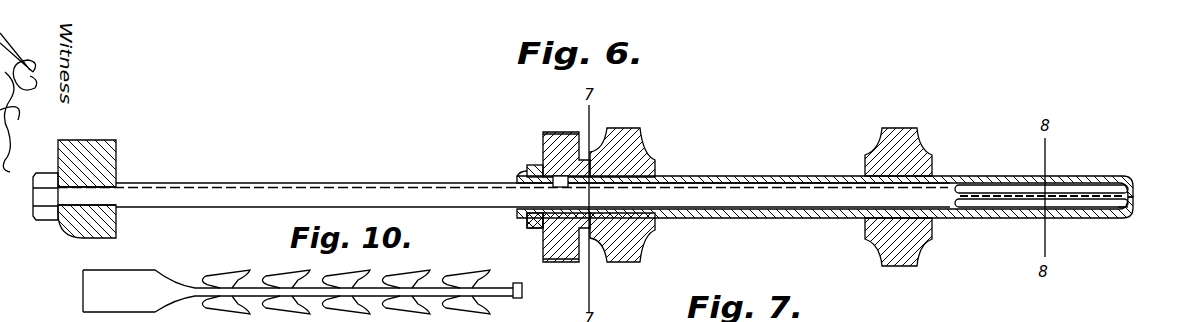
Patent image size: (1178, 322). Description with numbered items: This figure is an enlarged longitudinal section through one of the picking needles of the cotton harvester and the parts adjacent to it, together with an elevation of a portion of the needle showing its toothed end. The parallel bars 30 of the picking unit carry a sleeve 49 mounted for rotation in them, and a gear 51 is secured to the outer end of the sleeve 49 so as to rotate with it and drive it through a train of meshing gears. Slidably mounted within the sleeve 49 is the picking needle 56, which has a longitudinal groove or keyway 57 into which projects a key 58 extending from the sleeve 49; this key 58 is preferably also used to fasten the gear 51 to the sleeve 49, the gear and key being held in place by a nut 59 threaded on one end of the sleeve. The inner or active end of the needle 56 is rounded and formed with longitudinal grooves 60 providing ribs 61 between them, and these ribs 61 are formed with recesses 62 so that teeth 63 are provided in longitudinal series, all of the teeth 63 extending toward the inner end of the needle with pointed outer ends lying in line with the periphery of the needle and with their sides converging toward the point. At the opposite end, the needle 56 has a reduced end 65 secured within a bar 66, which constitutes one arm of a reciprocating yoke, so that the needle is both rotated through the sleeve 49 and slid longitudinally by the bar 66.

The parallel bars 30 is at (893, 148).
The sleeve 49 is at (758, 218).
The gear 51 is at (553, 148).
The picking needle 56 is at (843, 198).
The longitudinal groove or keyway 57 is at (357, 186).
The key 58 is at (548, 172).
The nut 59 is at (533, 228).
The longitudinal grooves 60 is at (1012, 207).
The ribs 61 is at (1102, 212).
The recesses 62 is at (1087, 187).
The teeth 63 is at (1065, 182).
The reduced end 65 is at (97, 198).
The bar 66 is at (105, 227).